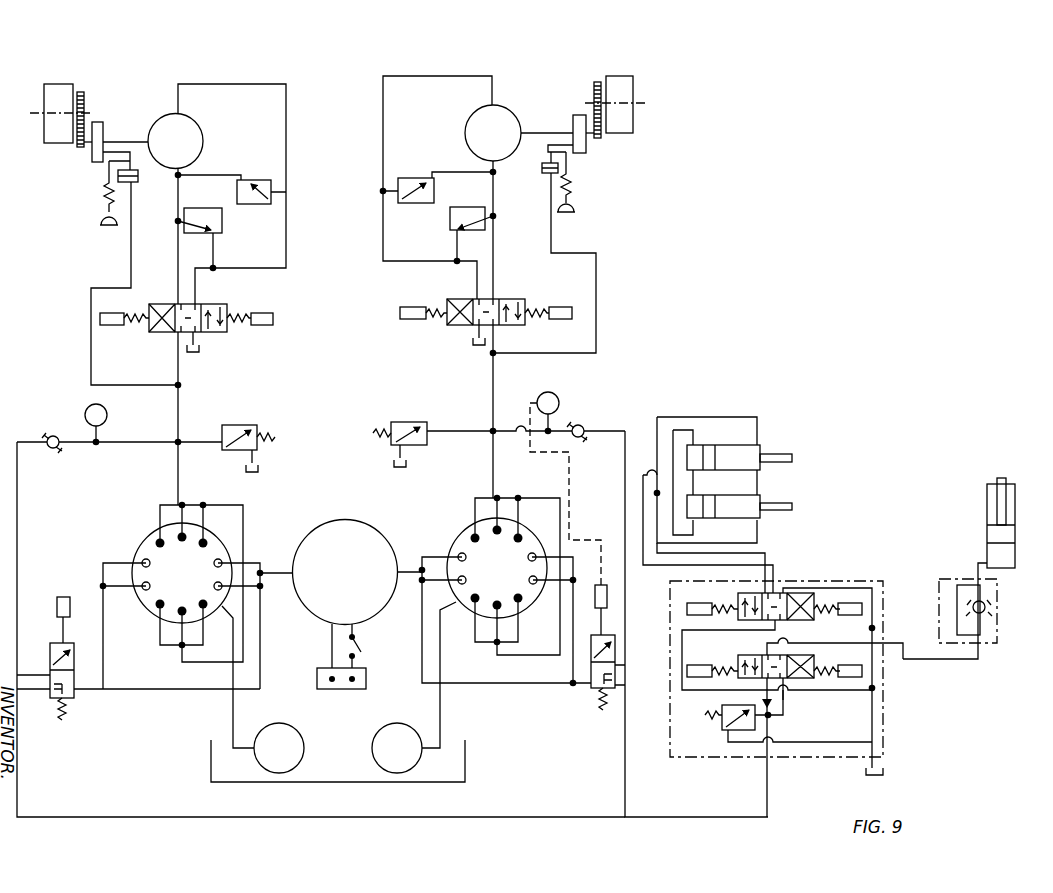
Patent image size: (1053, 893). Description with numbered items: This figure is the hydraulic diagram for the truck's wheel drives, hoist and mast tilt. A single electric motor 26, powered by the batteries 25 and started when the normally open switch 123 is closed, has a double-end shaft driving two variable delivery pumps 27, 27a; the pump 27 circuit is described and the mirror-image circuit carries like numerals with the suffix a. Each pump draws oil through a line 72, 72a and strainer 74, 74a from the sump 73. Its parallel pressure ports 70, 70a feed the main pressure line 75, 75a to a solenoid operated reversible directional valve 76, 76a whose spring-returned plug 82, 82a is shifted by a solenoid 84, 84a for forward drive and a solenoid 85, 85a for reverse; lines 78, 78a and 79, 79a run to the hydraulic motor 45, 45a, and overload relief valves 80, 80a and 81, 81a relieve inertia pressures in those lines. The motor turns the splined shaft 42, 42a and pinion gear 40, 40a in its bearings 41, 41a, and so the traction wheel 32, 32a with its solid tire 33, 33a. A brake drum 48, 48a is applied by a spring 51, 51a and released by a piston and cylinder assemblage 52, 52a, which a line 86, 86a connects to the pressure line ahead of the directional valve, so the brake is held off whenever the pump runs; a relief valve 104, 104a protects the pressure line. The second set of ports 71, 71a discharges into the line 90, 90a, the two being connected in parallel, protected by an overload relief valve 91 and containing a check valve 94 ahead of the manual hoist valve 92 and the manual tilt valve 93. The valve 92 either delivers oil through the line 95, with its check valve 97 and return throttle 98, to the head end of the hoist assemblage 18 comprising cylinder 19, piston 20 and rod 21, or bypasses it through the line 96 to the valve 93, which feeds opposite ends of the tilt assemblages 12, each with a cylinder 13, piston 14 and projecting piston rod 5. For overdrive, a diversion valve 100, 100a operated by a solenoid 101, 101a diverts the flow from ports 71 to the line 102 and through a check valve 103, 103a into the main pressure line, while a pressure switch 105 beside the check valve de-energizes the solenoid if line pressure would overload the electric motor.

The piston rod 5 is at (735, 463).
The reversible hydraulic piston and cylinder assemblage 12 is at (737, 426).
The cylinder 13 is at (740, 445).
The piston 14 is at (708, 446).
The reversible hydraulic piston and cylinder assemblage 18 is at (996, 523).
The cylinder 19 is at (987, 550).
The piston 20 is at (1006, 536).
The rod 21 is at (1006, 502).
The batteries 25 is at (366, 687).
The electric motor 26 is at (352, 510).
The variable delivery hydraulic pump 27 is at (494, 591).
The variable delivery hydraulic pump 27a is at (193, 595).
The traction wheel 32 is at (633, 103).
The traction wheel 32a is at (44, 112).
The solid tire 33 is at (630, 76).
The solid tire 33a is at (58, 84).
The pinion gear 40 is at (597, 82).
The pinion gear 40a is at (80, 150).
The antifriction bearings 41 is at (590, 145).
The antifriction bearings 41a is at (88, 152).
The splined shaft 42 is at (559, 132).
The splined shaft 42a is at (128, 142).
The hydraulic motor 45 is at (515, 113).
The hydraulic motor 45a is at (172, 114).
The brake drum 48 is at (583, 98).
The brake drum 48a is at (97, 122).
The spring 51 is at (576, 192).
The spring 51a is at (105, 191).
The piston and cylinder assemblage 52 is at (548, 174).
The piston and cylinder assemblage 52a is at (133, 182).
The pressure ports 70 is at (484, 528).
The pressure ports 70a is at (157, 539).
The pressure ports 71 is at (468, 568).
The pressure ports 71a is at (212, 580).
The line 72 is at (440, 648).
The line 72a is at (239, 646).
The sump 73 is at (352, 782).
The strainer 74 is at (373, 732).
The strainer 74a is at (260, 730).
The main pressure line 75 is at (493, 474).
The main pressure line 75a is at (178, 475).
The solenoid operated reversible directional valve 76 is at (513, 326).
The solenoid operated reversible directional valve 76a is at (212, 334).
The line 78 is at (436, 76).
The line 78a is at (200, 84).
The line 79 is at (493, 254).
The line 79a is at (178, 250).
The overload relief valve 80 is at (424, 204).
The overload relief valve 80a is at (247, 204).
The overload relief valve 81 is at (450, 222).
The overload relief valve 81a is at (222, 228).
The valve plug 82 is at (526, 299).
The valve plug 82a is at (231, 306).
The solenoid 84 is at (572, 314).
The solenoid 84a is at (100, 320).
The solenoid 85 is at (420, 307).
The solenoid 85a is at (274, 322).
The line 86 is at (556, 249).
The line 86a is at (131, 254).
The line 90 is at (625, 748).
The line 90a is at (21, 746).
The overload relief valve 91 is at (724, 723).
The manual control valve 92 is at (805, 663).
The manual control valve 93 is at (800, 593).
The check valve 94 is at (776, 703).
The line 95 is at (906, 657).
The line 96 is at (786, 691).
The check valve 97 is at (987, 605).
The throttle 98 is at (972, 611).
The solenoid operated diversion valve 100 is at (615, 650).
The solenoid operated diversion valve 100a is at (74, 660).
The solenoid 101 is at (607, 598).
The solenoid 101a is at (70, 580).
The line 102 is at (623, 519).
The check valve 103 is at (588, 429).
The check valve 103a is at (48, 441).
The pressure relief valve 104 is at (421, 412).
The pressure relief valve 104a is at (237, 425).
The pressure switch 105 is at (559, 402).
The normally open switch 123 is at (362, 647).